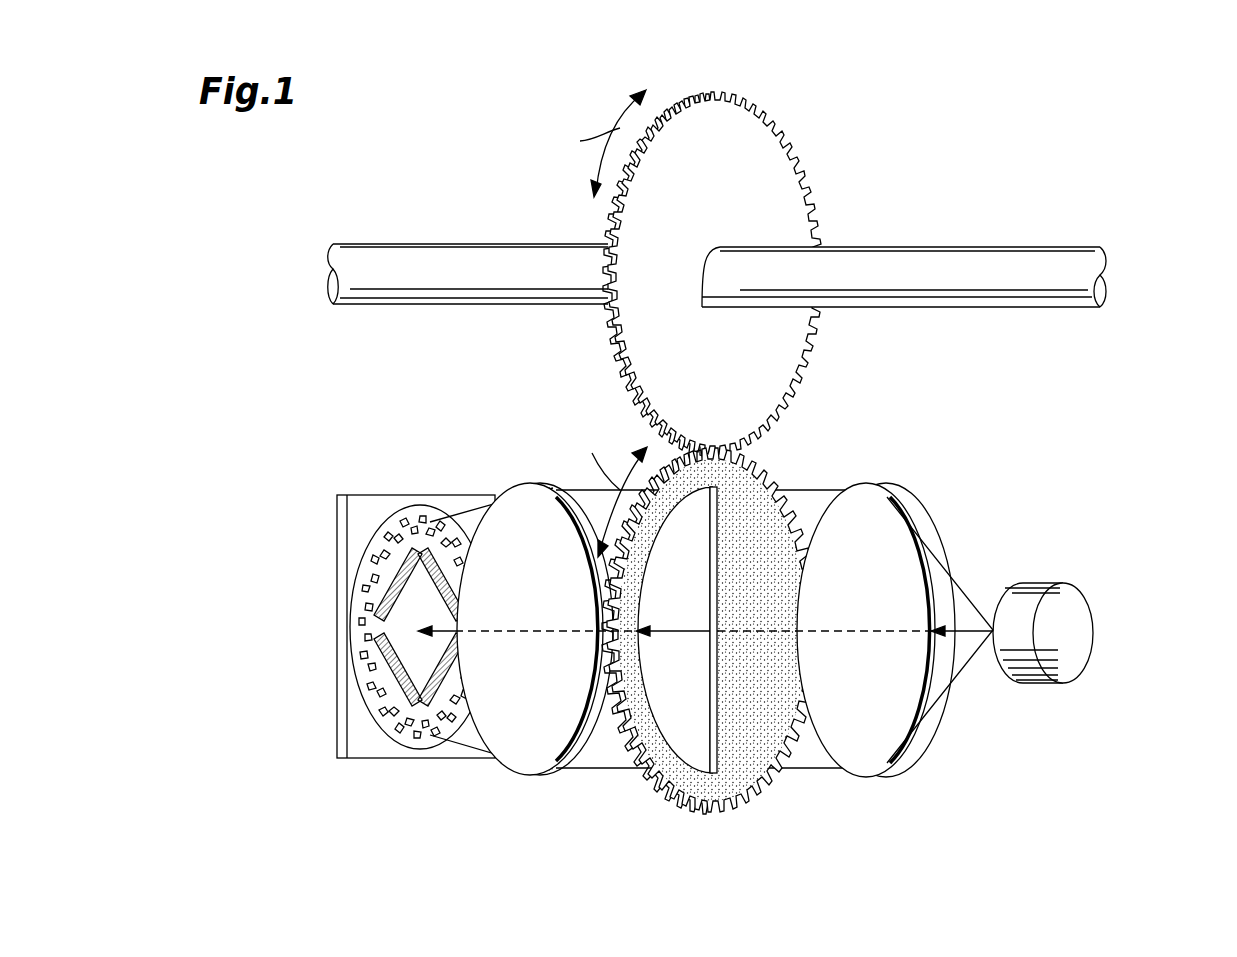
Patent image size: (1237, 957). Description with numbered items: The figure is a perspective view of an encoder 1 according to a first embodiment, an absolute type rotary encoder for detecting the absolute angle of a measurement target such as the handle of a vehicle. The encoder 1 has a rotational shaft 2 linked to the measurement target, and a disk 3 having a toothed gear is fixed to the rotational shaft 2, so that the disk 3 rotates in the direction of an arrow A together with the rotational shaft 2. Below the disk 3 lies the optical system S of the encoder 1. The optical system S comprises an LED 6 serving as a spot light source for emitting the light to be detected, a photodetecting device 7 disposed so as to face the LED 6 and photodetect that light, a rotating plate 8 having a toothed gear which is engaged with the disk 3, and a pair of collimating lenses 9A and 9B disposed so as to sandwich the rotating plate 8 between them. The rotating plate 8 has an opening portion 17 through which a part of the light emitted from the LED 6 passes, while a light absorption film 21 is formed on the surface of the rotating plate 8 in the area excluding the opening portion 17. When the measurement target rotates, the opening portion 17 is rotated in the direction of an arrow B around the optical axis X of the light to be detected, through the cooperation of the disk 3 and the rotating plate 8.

The encoder 1 is at (1108, 213).
The rotational shaft 2 is at (991, 265).
The disk having a toothed gear 3 is at (793, 183).
The LED (light source device) 6 is at (1080, 642).
The photodetecting device 7 is at (334, 697).
The rotating plate having a toothed gear 8 is at (744, 641).
The collimating lens 9A is at (905, 755).
The collimating lens 9B is at (523, 767).
The opening portion 17 is at (713, 697).
The light absorption film 21 is at (777, 730).
The optical system S is at (459, 472).
The optical axis X is at (968, 630).
The arrow A is at (601, 143).
The arrow B is at (613, 491).